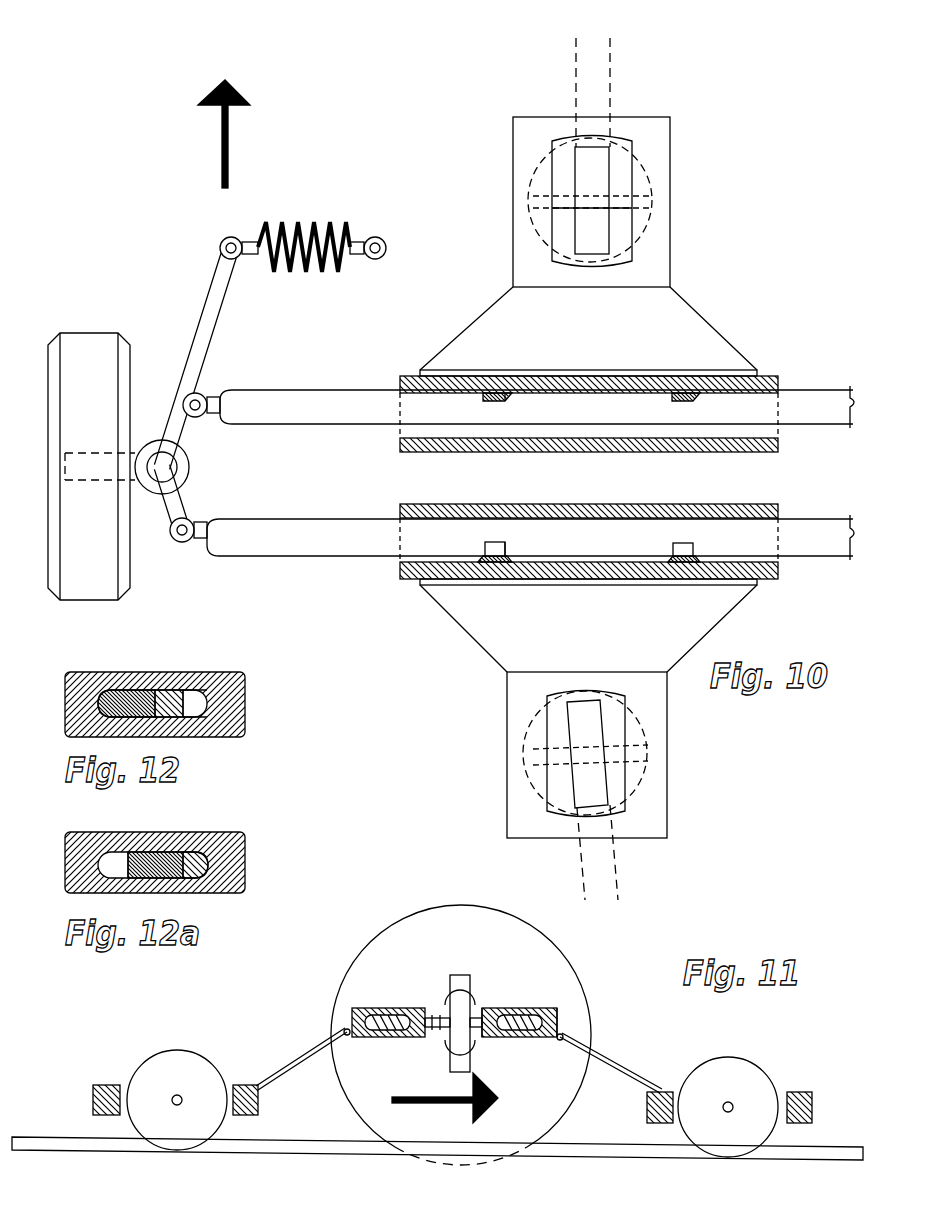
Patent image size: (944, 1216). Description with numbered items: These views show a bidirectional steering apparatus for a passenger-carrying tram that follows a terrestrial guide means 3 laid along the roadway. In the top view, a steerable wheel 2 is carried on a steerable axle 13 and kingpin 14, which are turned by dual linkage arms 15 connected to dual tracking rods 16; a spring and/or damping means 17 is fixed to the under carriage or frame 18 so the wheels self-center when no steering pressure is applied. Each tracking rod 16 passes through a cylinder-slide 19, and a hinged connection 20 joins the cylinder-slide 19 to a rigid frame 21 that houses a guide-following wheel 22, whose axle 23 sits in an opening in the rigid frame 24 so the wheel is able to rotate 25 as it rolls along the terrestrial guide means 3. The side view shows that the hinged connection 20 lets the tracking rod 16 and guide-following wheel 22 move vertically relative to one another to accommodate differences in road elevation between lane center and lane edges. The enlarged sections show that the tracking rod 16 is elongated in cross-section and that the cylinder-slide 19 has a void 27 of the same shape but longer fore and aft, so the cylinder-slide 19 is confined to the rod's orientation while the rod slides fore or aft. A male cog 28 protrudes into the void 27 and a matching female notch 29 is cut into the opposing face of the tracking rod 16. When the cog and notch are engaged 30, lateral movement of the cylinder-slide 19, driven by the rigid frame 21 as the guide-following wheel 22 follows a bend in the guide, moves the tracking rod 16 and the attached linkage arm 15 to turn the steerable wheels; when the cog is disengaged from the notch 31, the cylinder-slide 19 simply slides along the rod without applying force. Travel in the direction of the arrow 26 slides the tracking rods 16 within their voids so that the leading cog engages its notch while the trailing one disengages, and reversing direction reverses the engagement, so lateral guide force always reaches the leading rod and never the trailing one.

In FIG. 10, the steerable wheel 2 is at (88, 356).
In FIG. 11, the steerable wheel 2 is at (378, 918).
In FIG. 10, the terrestrial guide means 3 is at (594, 91).
In FIG. 11, the terrestrial guide means 3 is at (50, 1140).
In FIG. 10, the steerable axle 13 is at (95, 450).
In FIG. 10, the kingpin 14 is at (153, 467).
In FIG. 11, the kingpin 14 is at (472, 983).
In FIG. 10, the linkage arm 15 is at (200, 342).
In FIG. 11, the linkage arm 15 is at (439, 1026).
In FIG. 10, the tracking rod 16 is at (241, 399).
In FIG. 12, the tracking rod 16 is at (115, 688).
In FIG. 12A, the tracking rod 16 is at (162, 854).
In FIG. 11, the tracking rod 16 is at (390, 1021).
In FIG. 10, the spring and/or damping means 17 is at (300, 224).
In FIG. 10, the under carriage or frame 18 is at (380, 236).
In FIG. 10, the cylinder-slide 19 is at (456, 382).
In FIG. 12, the cylinder-slide 19 is at (226, 671).
In FIG. 12A, the cylinder-slide 19 is at (190, 832).
In FIG. 11, the cylinder-slide 19 is at (558, 1010).
In FIG. 10, the hinged connection 20 is at (713, 374).
In FIG. 11, the hinged connection 20 is at (566, 1030).
In FIG. 10, the rigid frame 21 is at (654, 252).
In FIG. 11, the rigid frame 21 is at (659, 1094).
In FIG. 10, the guide-following wheel 22 is at (597, 160).
In FIG. 11, the guide-following wheel 22 is at (729, 1060).
In FIG. 10, the axle 23 is at (621, 200).
In FIG. 11, the axle 23 is at (731, 1106).
In FIG. 10, the opening in the rigid frame 24 is at (565, 165).
In FIG. 10, the rotation of the guide-following wheel 25 is at (538, 187).
In FIG. 10, the arrow indicating direction of travel 26 is at (232, 126).
In FIG. 11, the arrow indicating direction of travel 26 is at (430, 1093).
In FIG. 10, the void 27 is at (730, 434).
In FIG. 12, the void 27 is at (183, 690).
In FIG. 12A, the void 27 is at (115, 866).
In FIG. 10, the male cog 28 is at (499, 400).
In FIG. 12, the male cog 28 is at (201, 707).
In FIG. 12A, the male cog 28 is at (201, 873).
In FIG. 10, the female notch 29 is at (482, 400).
In FIG. 12, the female notch 29 is at (160, 688).
In FIG. 12A, the female notch 29 is at (207, 862).
In FIG. 10, the engaged cog and notch 30 is at (671, 401).
In FIG. 10, the disengaged cog and notch 31 is at (670, 558).